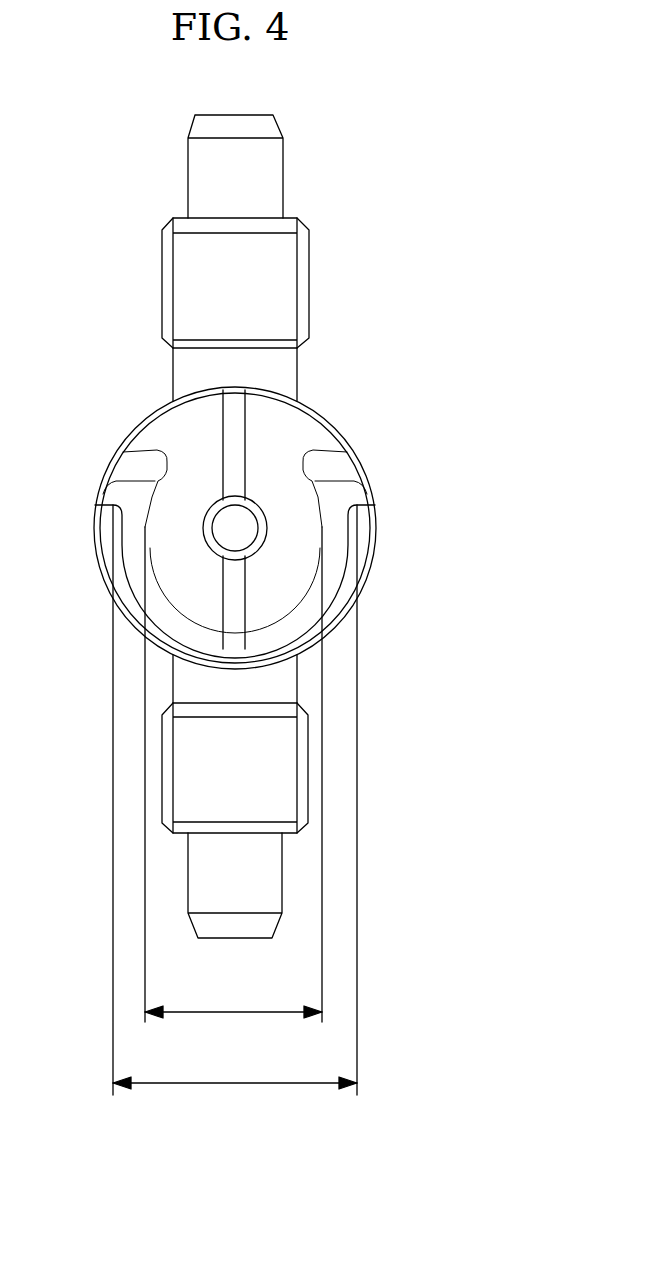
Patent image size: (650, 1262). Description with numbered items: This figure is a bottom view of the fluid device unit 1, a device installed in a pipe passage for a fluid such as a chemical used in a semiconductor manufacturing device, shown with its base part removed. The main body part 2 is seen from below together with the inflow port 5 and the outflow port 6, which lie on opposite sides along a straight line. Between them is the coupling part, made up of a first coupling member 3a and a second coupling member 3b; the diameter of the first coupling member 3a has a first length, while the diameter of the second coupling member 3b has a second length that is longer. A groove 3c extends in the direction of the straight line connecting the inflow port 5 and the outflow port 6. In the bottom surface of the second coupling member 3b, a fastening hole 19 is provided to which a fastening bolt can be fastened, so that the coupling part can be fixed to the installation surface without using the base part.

The fluid device unit 1 is at (472, 328).
The main body part 2 is at (377, 546).
The first coupling member 3a is at (101, 488).
The second coupling member 3b is at (112, 541).
The groove 3c is at (233, 424).
The inflow port 5 is at (282, 903).
The outflow port 6 is at (283, 167).
The fastening hole 19 is at (263, 509).